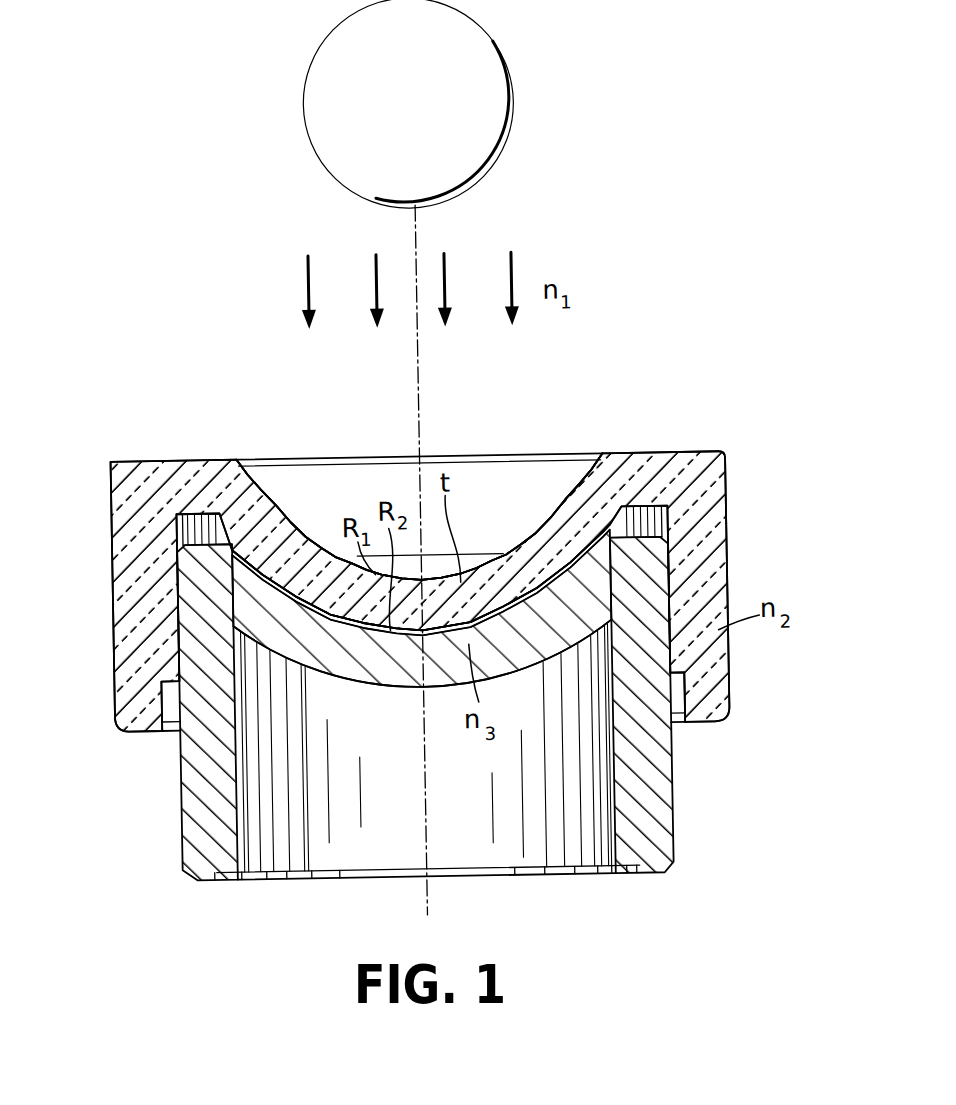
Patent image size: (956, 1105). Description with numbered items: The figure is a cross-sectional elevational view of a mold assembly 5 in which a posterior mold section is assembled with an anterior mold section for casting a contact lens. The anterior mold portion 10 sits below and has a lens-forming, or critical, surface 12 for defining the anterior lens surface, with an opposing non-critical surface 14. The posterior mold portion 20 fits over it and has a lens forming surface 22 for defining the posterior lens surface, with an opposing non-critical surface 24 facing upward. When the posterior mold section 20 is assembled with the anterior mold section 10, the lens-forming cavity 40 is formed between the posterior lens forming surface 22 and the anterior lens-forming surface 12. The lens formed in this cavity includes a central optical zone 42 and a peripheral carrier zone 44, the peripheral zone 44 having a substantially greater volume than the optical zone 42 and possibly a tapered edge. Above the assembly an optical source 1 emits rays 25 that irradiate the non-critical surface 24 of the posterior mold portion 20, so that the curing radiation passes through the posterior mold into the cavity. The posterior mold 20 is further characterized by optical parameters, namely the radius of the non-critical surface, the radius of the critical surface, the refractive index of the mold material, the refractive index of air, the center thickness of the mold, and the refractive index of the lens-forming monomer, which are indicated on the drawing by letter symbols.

The optical source 1 is at (528, 56).
The mold assembly 5 is at (101, 585).
The anterior mold portion 10 is at (688, 870).
The lens-forming surface 12 is at (533, 620).
The non-critical surface 14 is at (424, 686).
The posterior mold portion 20 is at (738, 684).
The lens forming surface 22 is at (579, 561).
The non-critical surface 24 is at (550, 521).
The rays 25 is at (518, 258).
The mold cavity 40 is at (669, 573).
The central optical zone 42 is at (403, 637).
The peripheral carrier zone 44 is at (641, 577).